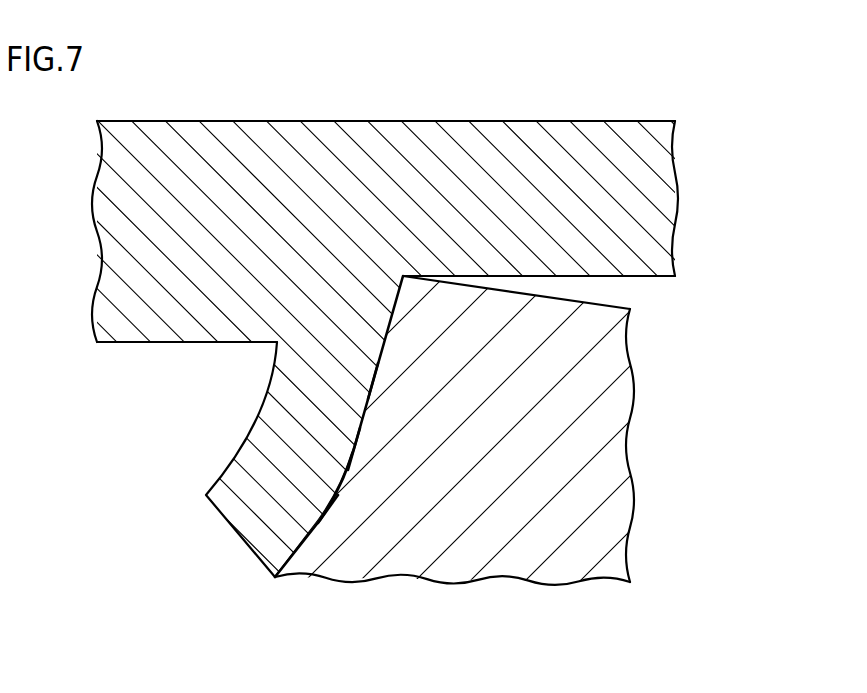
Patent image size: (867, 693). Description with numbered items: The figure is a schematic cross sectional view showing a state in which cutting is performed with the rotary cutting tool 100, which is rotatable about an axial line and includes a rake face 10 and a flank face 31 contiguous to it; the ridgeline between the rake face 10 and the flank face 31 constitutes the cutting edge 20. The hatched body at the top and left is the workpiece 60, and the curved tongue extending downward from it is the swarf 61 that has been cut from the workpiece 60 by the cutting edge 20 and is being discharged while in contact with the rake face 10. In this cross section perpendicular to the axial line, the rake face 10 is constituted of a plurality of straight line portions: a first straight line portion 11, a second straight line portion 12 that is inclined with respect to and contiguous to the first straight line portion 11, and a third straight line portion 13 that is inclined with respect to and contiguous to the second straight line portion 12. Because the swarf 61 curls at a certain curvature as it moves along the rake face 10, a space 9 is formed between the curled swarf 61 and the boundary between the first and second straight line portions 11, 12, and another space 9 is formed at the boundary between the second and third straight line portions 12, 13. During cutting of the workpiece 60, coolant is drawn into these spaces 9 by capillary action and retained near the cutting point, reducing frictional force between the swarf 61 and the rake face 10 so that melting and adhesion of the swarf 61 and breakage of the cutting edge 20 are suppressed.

The space 9 is at (333, 508).
The rake face 10 is at (146, 364).
The first straight line portion 11 is at (373, 383).
The second straight line portion 12 is at (347, 462).
The third straight line portion 13 is at (333, 510).
The cutting edge 20 is at (403, 274).
The flank face 31 is at (592, 302).
The workpiece 60 is at (197, 176).
The swarf 61 is at (283, 414).
The rotary cutting tool 100 is at (592, 473).